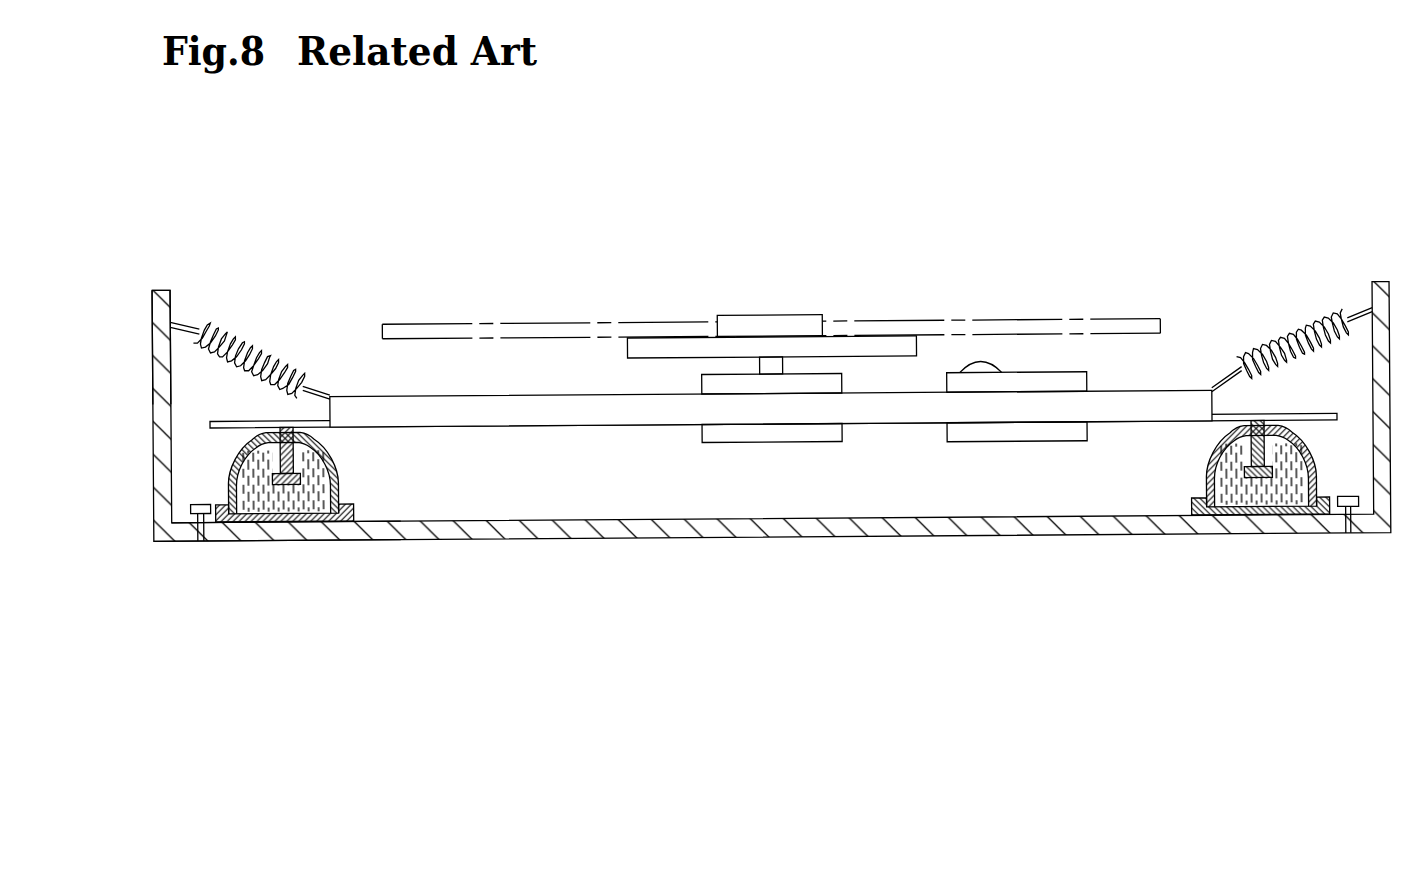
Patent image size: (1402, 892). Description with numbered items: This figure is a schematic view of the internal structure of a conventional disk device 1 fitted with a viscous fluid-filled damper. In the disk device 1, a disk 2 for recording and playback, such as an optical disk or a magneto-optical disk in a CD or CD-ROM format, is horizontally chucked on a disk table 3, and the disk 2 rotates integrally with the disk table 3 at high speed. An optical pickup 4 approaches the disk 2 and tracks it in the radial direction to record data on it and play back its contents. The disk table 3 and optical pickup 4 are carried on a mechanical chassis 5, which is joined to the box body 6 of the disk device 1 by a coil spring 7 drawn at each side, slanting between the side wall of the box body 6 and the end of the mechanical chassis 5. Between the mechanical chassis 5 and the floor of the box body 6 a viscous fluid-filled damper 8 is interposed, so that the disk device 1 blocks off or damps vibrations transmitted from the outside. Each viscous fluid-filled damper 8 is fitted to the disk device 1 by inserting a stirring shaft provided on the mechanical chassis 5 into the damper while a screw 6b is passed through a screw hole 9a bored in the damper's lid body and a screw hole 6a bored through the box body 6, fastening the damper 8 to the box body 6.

The disk device 1 is at (992, 202).
The disk 2 is at (505, 320).
The disk table 3 is at (628, 346).
The optical pickup 4 is at (943, 361).
The mechanical chassis 5 is at (568, 424).
The box body 6 is at (154, 350).
The screw hole 6a is at (203, 518).
The screw 6b is at (202, 497).
The coil spring 7 is at (264, 345).
The viscous fluid-filled damper 8 is at (362, 494).
The screw hole 9a is at (200, 518).